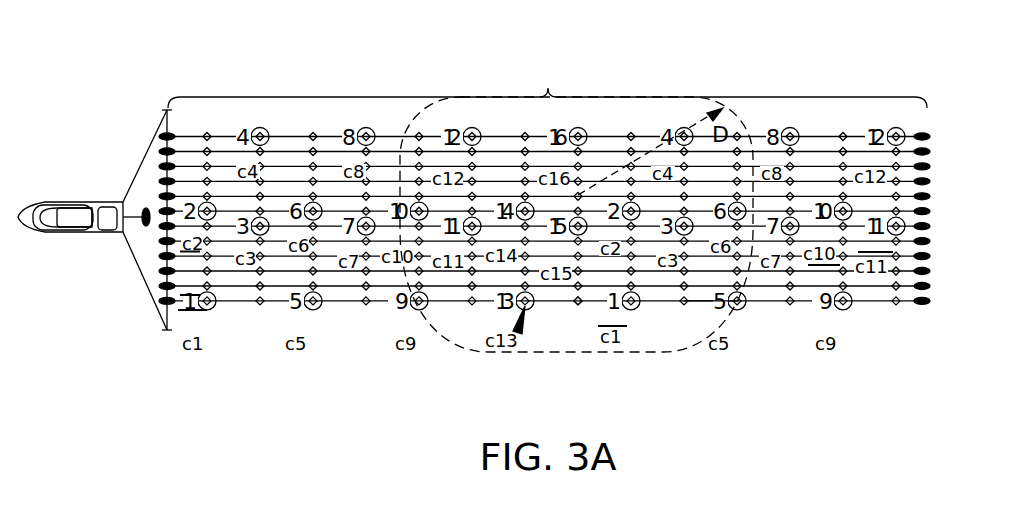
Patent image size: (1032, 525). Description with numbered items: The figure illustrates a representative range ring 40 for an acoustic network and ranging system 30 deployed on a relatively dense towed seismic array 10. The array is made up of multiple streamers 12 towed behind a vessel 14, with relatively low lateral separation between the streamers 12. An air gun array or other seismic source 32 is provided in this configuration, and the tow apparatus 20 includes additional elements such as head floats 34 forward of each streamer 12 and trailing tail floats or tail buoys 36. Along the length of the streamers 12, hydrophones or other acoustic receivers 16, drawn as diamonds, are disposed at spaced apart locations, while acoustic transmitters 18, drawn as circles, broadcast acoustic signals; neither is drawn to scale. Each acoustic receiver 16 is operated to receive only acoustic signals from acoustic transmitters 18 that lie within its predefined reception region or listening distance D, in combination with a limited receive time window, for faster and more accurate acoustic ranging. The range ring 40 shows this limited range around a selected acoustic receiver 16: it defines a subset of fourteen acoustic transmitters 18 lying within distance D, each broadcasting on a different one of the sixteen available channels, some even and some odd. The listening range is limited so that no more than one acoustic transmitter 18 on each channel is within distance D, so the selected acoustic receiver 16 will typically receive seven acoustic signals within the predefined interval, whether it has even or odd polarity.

The acoustic network and ranging system 30 is at (120, 68).
The towed seismic array 10 is at (547, 83).
The vessel 14 is at (95, 201).
The seismic source 32 is at (143, 208).
The tow apparatus 20 is at (140, 272).
The streamer 12 is at (232, 307).
The head float 34 is at (173, 306).
The acoustic transmitter 18 is at (502, 352).
The acoustic receiver 16 is at (578, 303).
The range ring 40 is at (714, 312).
The tail buoy 36 is at (924, 306).